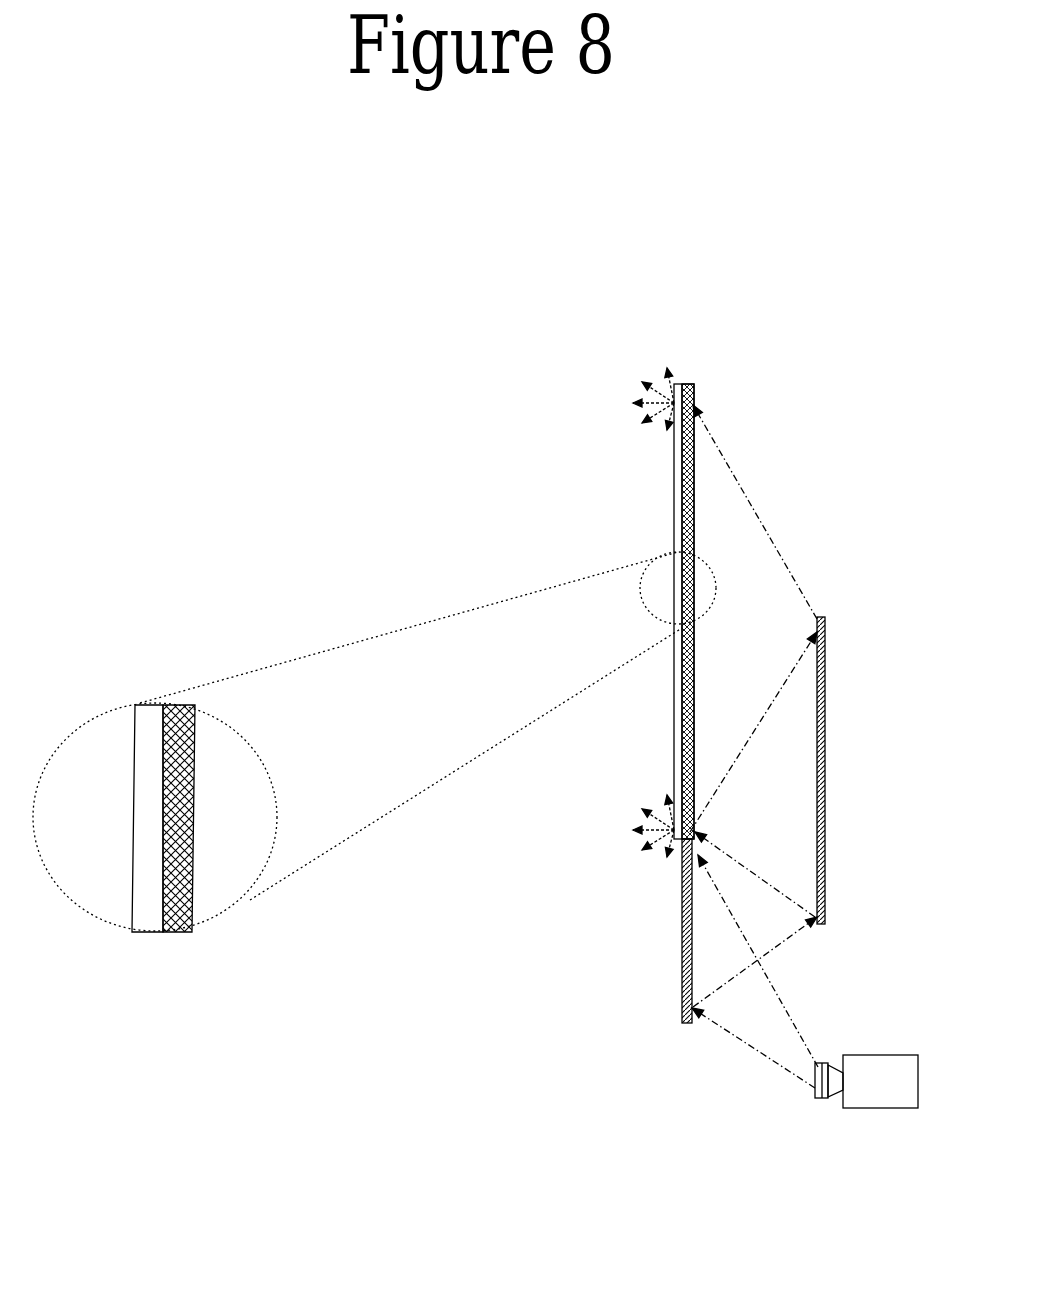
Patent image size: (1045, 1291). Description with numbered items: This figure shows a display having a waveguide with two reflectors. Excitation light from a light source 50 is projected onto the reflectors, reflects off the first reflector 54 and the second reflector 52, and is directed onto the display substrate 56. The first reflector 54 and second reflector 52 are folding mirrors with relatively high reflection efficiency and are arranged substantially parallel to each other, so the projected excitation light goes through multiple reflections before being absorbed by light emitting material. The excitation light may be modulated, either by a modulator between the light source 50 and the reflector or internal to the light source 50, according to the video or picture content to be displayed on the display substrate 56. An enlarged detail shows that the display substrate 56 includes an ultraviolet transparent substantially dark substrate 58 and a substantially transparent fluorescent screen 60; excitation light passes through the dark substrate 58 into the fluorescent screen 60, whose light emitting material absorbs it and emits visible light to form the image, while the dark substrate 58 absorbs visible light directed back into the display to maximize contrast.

The light source 50 is at (888, 1093).
The second reflector 52 is at (826, 787).
The first reflector 54 is at (683, 991).
The display substrate 56 is at (684, 380).
The substantially dark substrate 58 is at (172, 848).
The substantially transparent fluorescent screen 60 is at (153, 868).